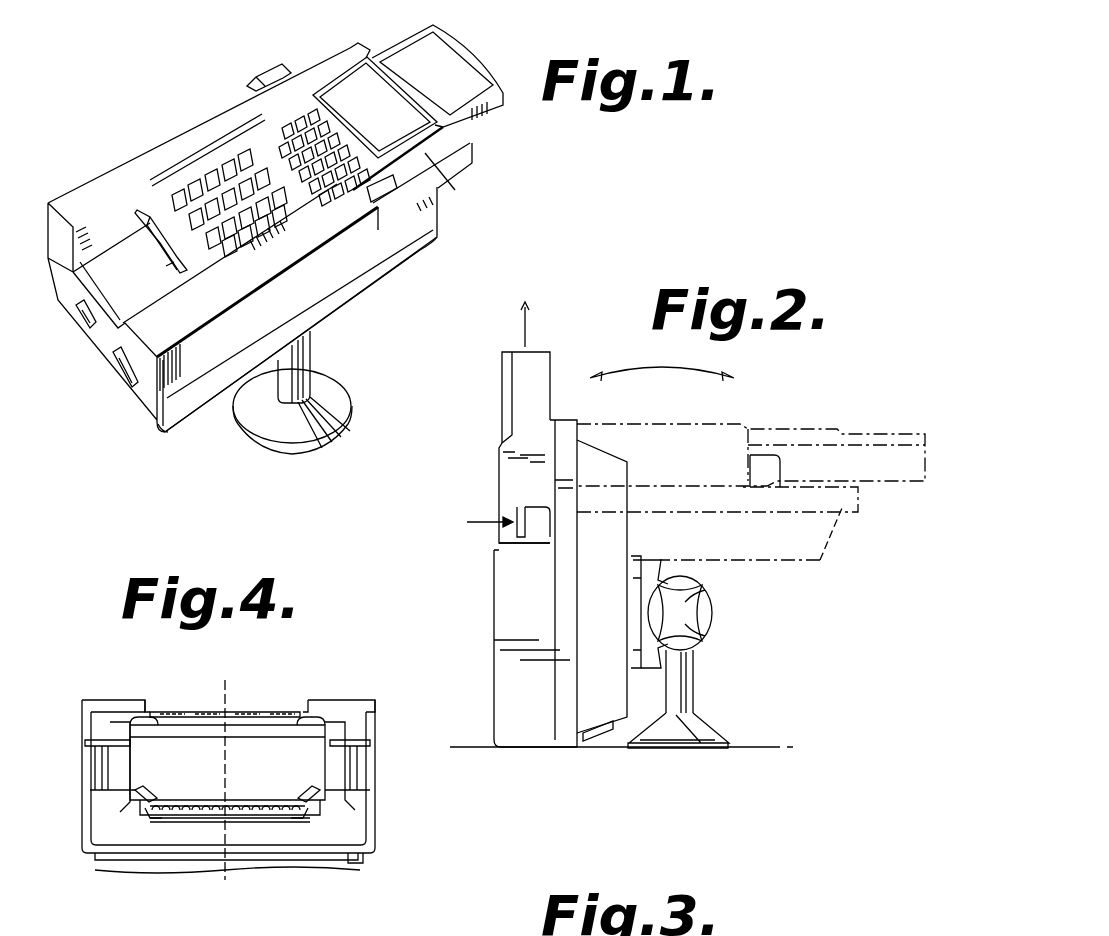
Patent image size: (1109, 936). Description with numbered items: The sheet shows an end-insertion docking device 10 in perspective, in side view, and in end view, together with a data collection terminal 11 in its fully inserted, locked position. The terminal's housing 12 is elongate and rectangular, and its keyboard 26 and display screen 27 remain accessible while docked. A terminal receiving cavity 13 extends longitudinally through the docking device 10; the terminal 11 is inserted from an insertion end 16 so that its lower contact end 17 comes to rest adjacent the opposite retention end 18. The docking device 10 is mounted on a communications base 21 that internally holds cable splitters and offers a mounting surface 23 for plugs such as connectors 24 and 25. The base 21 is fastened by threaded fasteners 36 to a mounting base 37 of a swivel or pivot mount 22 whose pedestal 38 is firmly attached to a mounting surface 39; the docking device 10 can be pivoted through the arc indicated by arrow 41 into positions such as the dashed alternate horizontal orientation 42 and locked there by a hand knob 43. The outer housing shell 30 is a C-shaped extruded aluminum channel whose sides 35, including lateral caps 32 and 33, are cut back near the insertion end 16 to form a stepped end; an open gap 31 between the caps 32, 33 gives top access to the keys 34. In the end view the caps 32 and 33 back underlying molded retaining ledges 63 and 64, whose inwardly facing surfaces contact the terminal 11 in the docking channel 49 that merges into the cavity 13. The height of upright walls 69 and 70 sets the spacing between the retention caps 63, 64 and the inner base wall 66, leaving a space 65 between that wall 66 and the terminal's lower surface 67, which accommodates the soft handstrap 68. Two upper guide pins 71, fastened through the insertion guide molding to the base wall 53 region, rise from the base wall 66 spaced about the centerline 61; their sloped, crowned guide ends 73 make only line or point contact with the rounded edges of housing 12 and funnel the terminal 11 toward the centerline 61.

In FIG. 1, the docking device 10 is at (126, 122).
In FIG. 2, the docking device 10 is at (844, 514).
In FIG. 1, the data collection terminal 11 is at (376, 44).
In FIG. 2, the data collection terminal 11 is at (543, 381).
In FIG. 4, the data collection terminal 11 is at (285, 694).
In FIG. 1, the housing 12 is at (434, 162).
In FIG. 4, the housing 12 is at (364, 773).
In FIG. 1, the terminal receiving cavity 13 is at (148, 195).
In FIG. 1, the insertion end 16 is at (462, 146).
In FIG. 1, the lower contact end 17 is at (205, 252).
In FIG. 1, the retention end 18 is at (106, 272).
In FIG. 1, the communications base 21 is at (408, 260).
In FIG. 1, the swivel or pivot mount 22 is at (305, 354).
In FIG. 2, the swivel or pivot mount 22 is at (690, 678).
In FIG. 1, the mounting surface 23 is at (150, 404).
In FIG. 1, the connector 24 is at (89, 335).
In FIG. 1, the connector 25 is at (125, 378).
In FIG. 2, the connector 25 is at (608, 737).
In FIG. 1, the keyboard 26 is at (238, 162).
In FIG. 1, the display screen 27 is at (353, 77).
In FIG. 1, the outer housing shell 30 is at (75, 196).
In FIG. 2, the outer housing shell 30 is at (500, 694).
In FIG. 4, the outer housing shell 30 is at (375, 822).
In FIG. 4, the open gap 31 is at (250, 692).
In FIG. 4, the lateral cap 32 is at (319, 700).
In FIG. 4, the lateral cap 33 is at (118, 700).
In FIG. 4, the keys 34 is at (213, 712).
In FIG. 2, the sides 35 is at (500, 577).
In FIG. 2, the threaded fasteners 36 is at (639, 561).
In FIG. 2, the mounting base 37 is at (628, 620).
In FIG. 2, the pedestal 38 is at (704, 732).
In FIG. 2, the mounting surface 39 is at (750, 746).
In FIG. 2, the arrow 41 is at (631, 377).
In FIG. 2, the alternate horizontal orientation 42 is at (703, 426).
In FIG. 2, the hand knob 43 is at (706, 614).
In FIG. 1, the docking channel 49 is at (441, 208).
In FIG. 4, the docking channel 49 is at (125, 746).
In FIG. 4, the base wall 53 is at (360, 863).
In FIG. 4, the centerline 61 is at (217, 838).
In FIG. 4, the retaining ledge 63 is at (170, 720).
In FIG. 4, the retaining ledge 64 is at (320, 723).
In FIG. 4, the space 65 is at (185, 832).
In FIG. 4, the inner base wall 66 is at (155, 835).
In FIG. 4, the lower surface 67 is at (306, 818).
In FIG. 4, the handstrap 68 is at (259, 835).
In FIG. 4, the upright wall 69 is at (105, 773).
In FIG. 4, the upright wall 70 is at (338, 748).
In FIG. 4, the upper guide pins 71 is at (149, 808).
In FIG. 4, the guide ends 73 is at (145, 803).